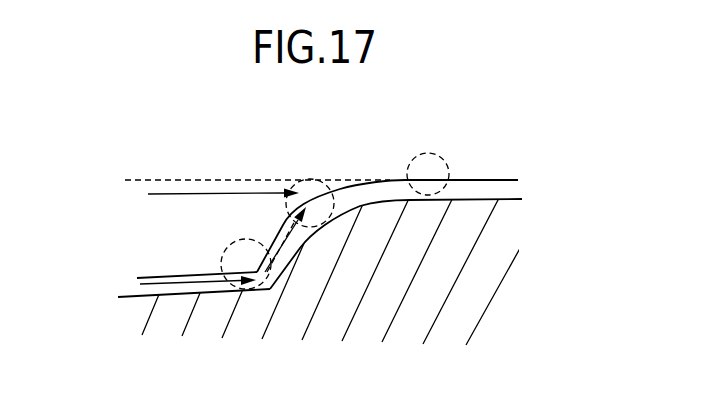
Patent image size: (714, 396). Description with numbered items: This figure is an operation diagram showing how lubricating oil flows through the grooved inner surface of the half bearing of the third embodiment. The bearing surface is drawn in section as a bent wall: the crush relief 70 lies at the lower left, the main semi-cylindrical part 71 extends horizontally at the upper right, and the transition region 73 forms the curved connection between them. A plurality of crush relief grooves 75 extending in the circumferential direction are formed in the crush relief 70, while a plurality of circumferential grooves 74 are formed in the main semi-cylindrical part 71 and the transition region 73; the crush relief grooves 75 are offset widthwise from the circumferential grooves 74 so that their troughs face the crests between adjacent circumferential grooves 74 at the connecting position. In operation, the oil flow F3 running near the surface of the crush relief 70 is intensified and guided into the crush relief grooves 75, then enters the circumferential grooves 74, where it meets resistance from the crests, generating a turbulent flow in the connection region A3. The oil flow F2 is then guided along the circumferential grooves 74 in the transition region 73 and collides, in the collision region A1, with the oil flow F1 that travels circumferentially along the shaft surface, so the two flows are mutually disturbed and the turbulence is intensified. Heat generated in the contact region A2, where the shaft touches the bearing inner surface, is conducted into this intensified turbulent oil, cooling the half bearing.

The crush relief 70 is at (173, 167).
The main semi-cylindrical part 71 is at (511, 145).
The transition region 73 is at (320, 165).
The circumferential grooves 74 is at (527, 192).
The crush relief grooves 75 is at (96, 297).
The oil flow F1 is at (157, 194).
The oil flow F2 is at (280, 232).
The oil flow F3 is at (155, 281).
The collision region A1 is at (300, 180).
The contact region A2 is at (424, 153).
The connection region A3 is at (221, 255).